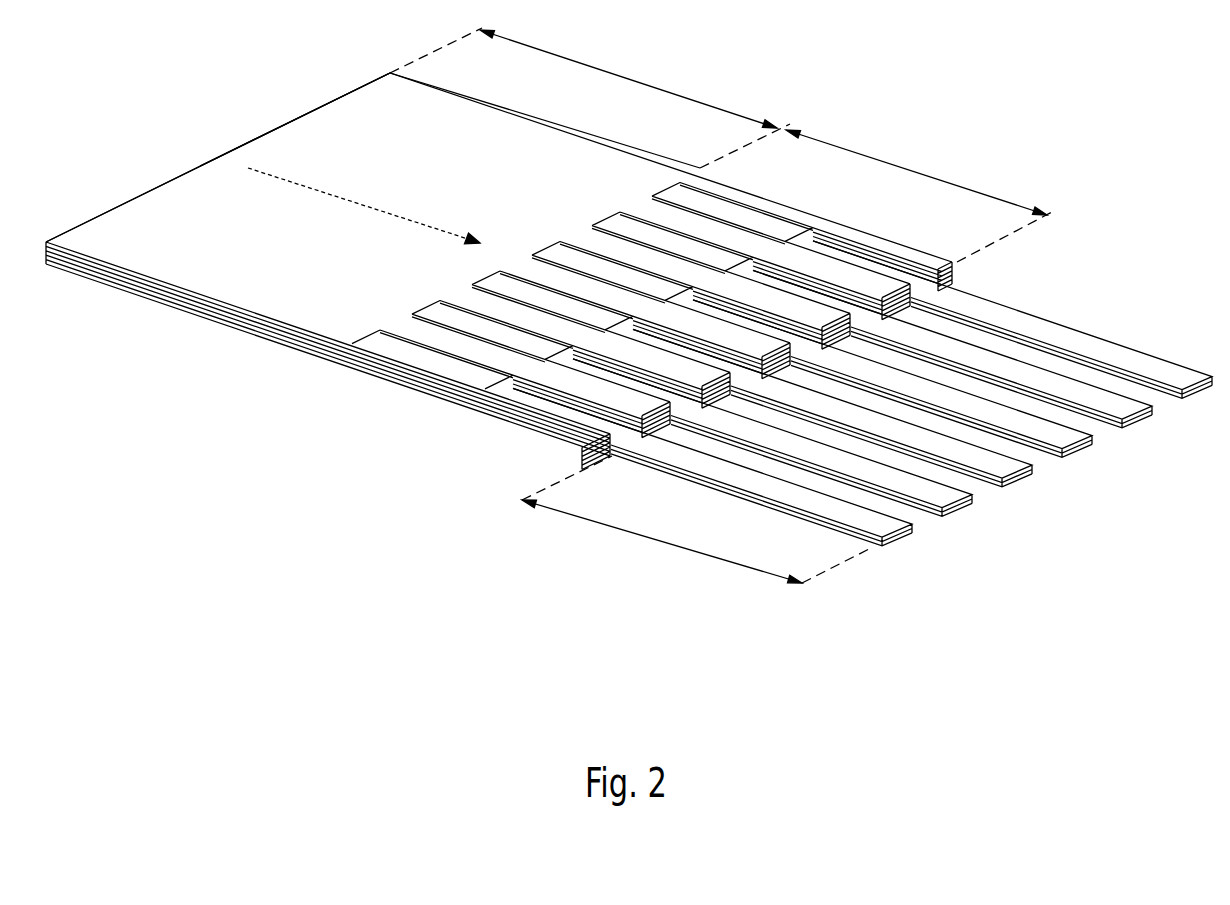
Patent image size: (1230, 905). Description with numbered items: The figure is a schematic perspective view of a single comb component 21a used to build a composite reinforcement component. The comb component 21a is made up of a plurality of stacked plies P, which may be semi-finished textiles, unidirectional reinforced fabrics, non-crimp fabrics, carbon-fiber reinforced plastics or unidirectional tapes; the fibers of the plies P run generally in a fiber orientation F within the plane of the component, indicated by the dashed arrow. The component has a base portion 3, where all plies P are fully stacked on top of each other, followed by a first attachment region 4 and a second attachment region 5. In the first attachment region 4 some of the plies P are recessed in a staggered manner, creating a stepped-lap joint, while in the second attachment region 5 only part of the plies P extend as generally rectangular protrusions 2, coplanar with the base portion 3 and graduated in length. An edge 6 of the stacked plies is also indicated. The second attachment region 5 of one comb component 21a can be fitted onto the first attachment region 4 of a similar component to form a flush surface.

The lower comb fingers 2 is at (1146, 368).
The base portion 3 is at (626, 78).
The first attachment region 4 is at (908, 165).
The second attachment region 5 is at (660, 540).
The rear edge of sheet stack 6 is at (300, 117).
The comb component 21a is at (164, 154).
The stacked plies P is at (233, 318).
The fiber orientation F is at (322, 194).